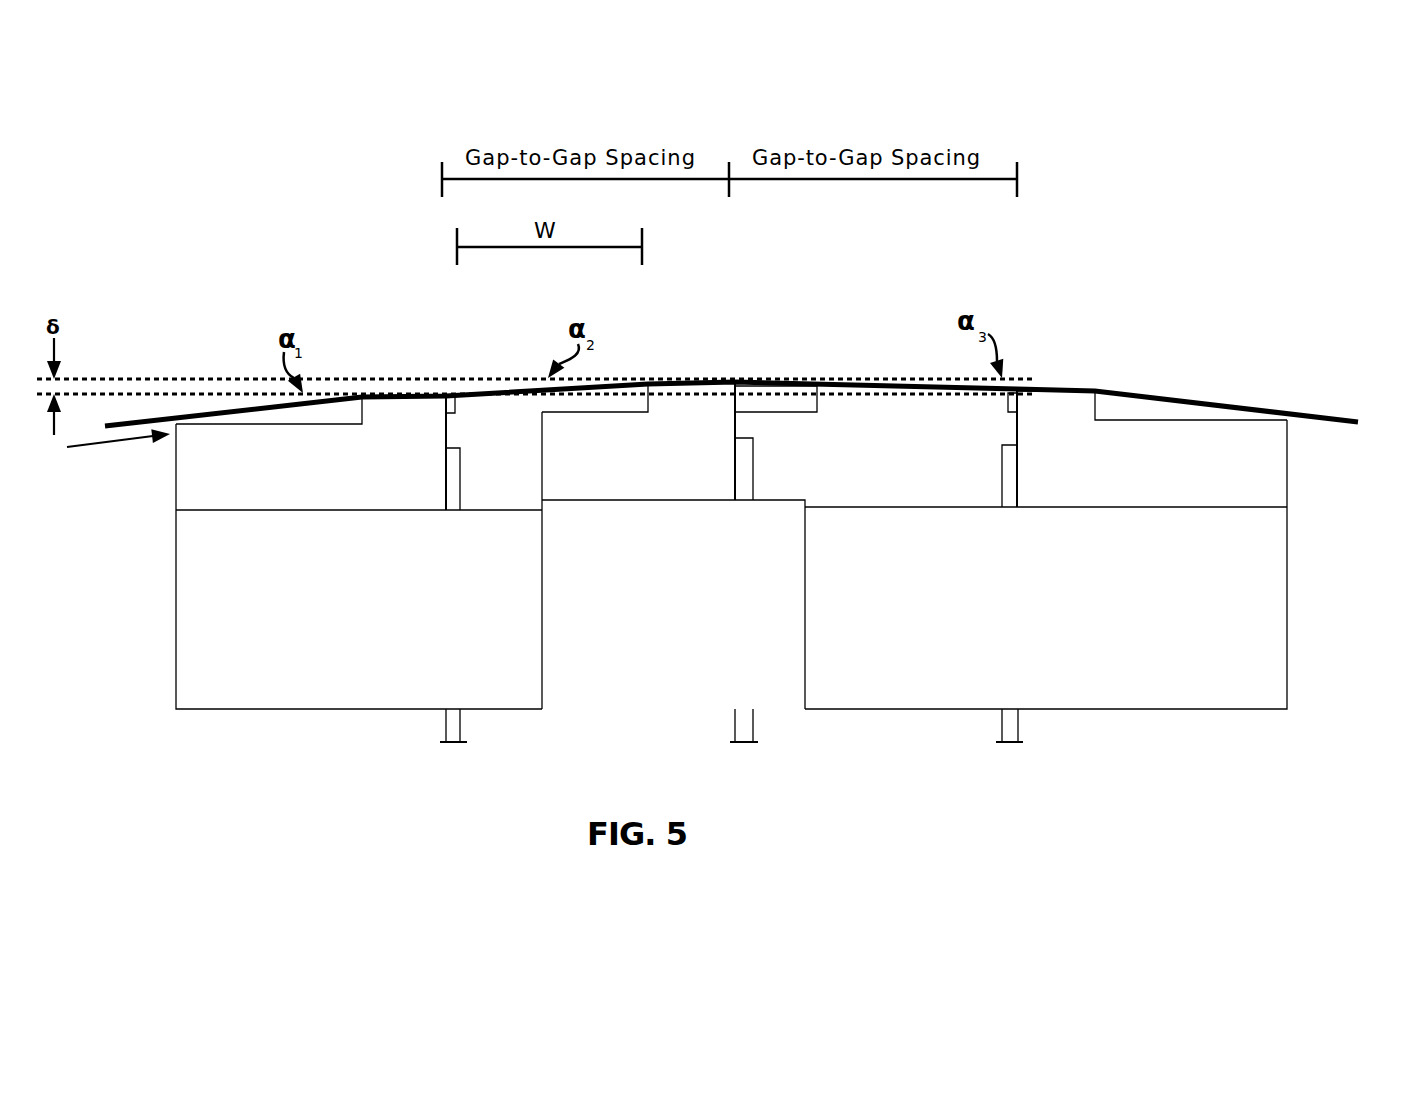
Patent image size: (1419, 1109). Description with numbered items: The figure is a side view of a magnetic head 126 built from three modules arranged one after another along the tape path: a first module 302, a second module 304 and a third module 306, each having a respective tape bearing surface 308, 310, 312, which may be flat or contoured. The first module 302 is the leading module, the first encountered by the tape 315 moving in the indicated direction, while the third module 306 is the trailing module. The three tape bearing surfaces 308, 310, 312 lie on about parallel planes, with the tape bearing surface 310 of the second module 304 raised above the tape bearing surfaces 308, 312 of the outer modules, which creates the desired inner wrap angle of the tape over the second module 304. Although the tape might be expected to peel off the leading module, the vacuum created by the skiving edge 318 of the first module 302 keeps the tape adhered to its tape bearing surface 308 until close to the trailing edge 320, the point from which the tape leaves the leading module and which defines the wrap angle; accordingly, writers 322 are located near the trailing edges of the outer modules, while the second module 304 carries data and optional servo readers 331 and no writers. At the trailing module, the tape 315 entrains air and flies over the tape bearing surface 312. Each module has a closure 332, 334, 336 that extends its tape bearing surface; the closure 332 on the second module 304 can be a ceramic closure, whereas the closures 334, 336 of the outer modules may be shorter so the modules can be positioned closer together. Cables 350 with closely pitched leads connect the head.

The magnetic head 126 is at (344, 246).
The first module 302 is at (175, 474).
The second module 304 is at (622, 412).
The third module 306 is at (1288, 470).
The tape bearing surface 308 is at (416, 373).
The tape bearing surface 310 is at (677, 363).
The tape bearing surface 312 is at (1046, 372).
The tape 315 is at (1150, 398).
The skiving edge 318 is at (342, 413).
The trailing edge 320 is at (473, 402).
The writers 322 is at (447, 373).
The data and optional servo readers 331 is at (736, 363).
The closure 332 is at (785, 412).
The closure 334 is at (456, 410).
The closure 336 is at (1007, 402).
The cables 350 is at (463, 726).